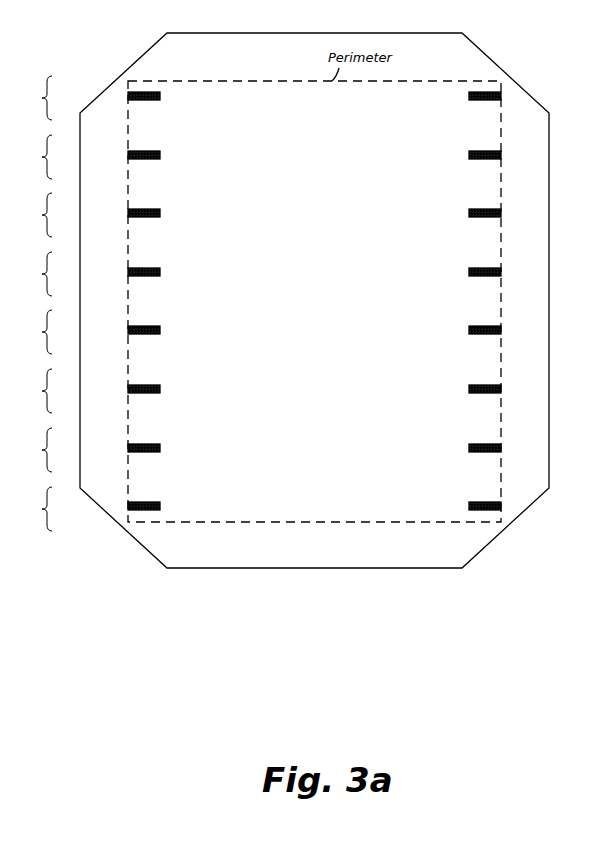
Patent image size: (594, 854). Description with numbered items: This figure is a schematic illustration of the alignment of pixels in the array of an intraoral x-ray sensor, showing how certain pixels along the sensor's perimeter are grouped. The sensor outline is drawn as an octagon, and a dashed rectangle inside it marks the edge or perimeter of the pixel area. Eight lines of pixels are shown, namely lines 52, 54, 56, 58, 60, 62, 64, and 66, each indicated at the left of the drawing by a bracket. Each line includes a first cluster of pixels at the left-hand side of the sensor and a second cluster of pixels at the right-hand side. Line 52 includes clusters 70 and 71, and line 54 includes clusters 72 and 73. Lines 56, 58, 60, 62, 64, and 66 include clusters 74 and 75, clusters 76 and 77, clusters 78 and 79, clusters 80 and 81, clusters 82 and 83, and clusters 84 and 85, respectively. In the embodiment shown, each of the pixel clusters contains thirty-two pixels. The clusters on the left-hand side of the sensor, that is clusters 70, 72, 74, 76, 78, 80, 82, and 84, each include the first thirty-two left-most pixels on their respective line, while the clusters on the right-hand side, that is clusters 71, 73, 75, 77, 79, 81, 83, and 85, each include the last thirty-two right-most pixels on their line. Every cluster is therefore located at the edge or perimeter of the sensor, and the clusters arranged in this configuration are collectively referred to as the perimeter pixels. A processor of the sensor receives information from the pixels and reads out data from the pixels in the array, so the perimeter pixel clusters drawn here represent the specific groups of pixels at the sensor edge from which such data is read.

The pixel cluster 70 is at (160, 99).
The pixel cluster 72 is at (160, 158).
The pixel cluster 74 is at (160, 216).
The pixel cluster 76 is at (160, 275).
The pixel cluster 78 is at (160, 333).
The pixel cluster 80 is at (160, 392).
The pixel cluster 82 is at (160, 451).
The pixel cluster 84 is at (160, 503).
The pixel cluster 71 is at (469, 99).
The pixel cluster 73 is at (469, 158).
The pixel cluster 75 is at (469, 216).
The pixel cluster 77 is at (469, 275).
The pixel cluster 79 is at (469, 333).
The pixel cluster 81 is at (469, 392).
The pixel cluster 83 is at (469, 451).
The pixel cluster 85 is at (469, 503).
The line of pixels 52 is at (36, 98).
The line of pixels 54 is at (36, 157).
The line of pixels 56 is at (36, 215).
The line of pixels 58 is at (36, 274).
The line of pixels 60 is at (36, 332).
The line of pixels 62 is at (36, 391).
The line of pixels 64 is at (36, 450).
The line of pixels 66 is at (36, 509).